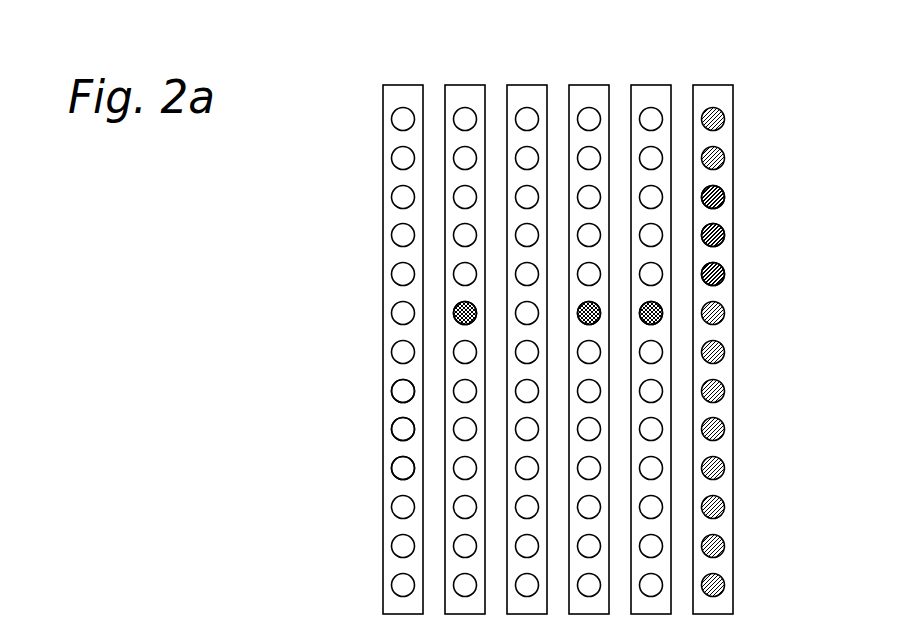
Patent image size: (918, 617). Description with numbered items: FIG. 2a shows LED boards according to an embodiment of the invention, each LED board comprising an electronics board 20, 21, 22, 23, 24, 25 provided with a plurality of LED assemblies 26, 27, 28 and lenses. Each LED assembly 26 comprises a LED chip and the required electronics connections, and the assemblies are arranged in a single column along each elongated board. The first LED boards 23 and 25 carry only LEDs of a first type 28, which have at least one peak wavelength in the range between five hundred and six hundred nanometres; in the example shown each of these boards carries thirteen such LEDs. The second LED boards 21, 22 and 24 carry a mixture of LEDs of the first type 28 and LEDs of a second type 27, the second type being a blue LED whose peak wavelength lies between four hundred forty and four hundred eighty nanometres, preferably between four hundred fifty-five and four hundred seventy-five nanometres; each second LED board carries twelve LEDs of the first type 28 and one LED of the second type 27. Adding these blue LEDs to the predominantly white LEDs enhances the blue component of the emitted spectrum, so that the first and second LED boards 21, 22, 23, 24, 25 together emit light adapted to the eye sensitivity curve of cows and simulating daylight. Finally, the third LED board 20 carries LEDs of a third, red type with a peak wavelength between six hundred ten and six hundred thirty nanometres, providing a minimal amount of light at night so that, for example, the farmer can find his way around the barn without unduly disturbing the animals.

The third LED board 20 is at (708, 92).
The second LED board 21 is at (657, 92).
The second LED board 22 is at (592, 92).
The first LED board 23 is at (528, 92).
The second LED board 24 is at (462, 92).
The first LED board 25 is at (396, 101).
The LED assembly 26 is at (728, 273).
The LED of a second type 27 is at (456, 306).
The LED of a first type 28 is at (397, 394).